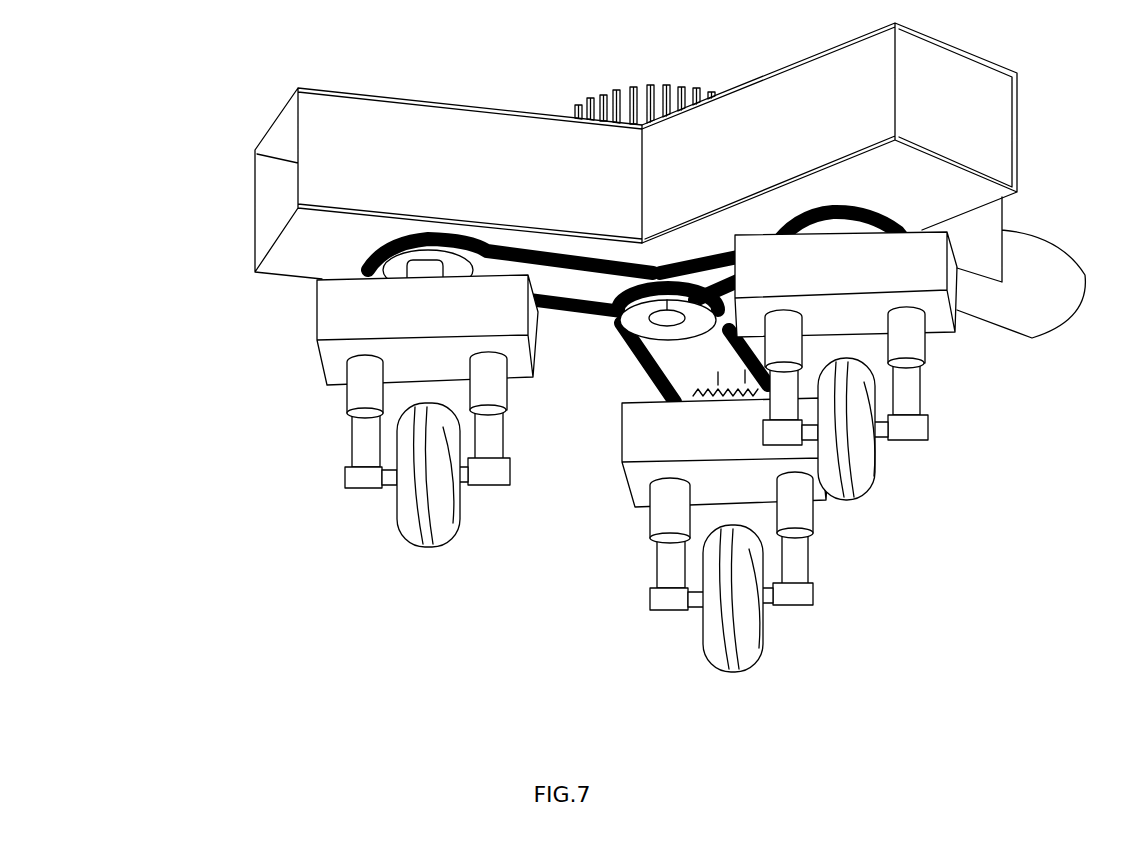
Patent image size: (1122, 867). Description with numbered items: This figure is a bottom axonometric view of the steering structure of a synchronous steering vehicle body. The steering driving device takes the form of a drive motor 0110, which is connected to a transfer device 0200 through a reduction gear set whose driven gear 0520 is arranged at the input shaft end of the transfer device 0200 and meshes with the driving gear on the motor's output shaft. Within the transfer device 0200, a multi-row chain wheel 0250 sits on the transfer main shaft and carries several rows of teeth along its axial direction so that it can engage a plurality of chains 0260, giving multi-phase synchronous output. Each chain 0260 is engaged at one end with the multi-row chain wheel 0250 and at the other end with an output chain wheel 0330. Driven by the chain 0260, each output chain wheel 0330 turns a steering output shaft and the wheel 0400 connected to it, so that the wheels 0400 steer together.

The drive motor 0110 is at (1027, 320).
The transfer device 0200 is at (652, 258).
The multi-row chain wheel 0250 is at (640, 325).
The chain 0260 is at (437, 270).
The output chain wheel 0330 is at (393, 272).
The wheel 0400 is at (767, 620).
The driven gear 0520 is at (640, 83).